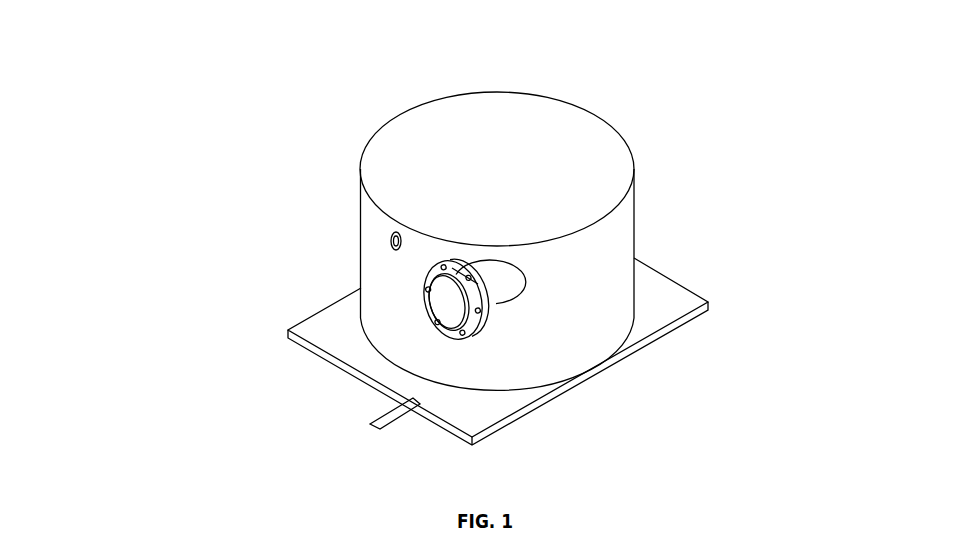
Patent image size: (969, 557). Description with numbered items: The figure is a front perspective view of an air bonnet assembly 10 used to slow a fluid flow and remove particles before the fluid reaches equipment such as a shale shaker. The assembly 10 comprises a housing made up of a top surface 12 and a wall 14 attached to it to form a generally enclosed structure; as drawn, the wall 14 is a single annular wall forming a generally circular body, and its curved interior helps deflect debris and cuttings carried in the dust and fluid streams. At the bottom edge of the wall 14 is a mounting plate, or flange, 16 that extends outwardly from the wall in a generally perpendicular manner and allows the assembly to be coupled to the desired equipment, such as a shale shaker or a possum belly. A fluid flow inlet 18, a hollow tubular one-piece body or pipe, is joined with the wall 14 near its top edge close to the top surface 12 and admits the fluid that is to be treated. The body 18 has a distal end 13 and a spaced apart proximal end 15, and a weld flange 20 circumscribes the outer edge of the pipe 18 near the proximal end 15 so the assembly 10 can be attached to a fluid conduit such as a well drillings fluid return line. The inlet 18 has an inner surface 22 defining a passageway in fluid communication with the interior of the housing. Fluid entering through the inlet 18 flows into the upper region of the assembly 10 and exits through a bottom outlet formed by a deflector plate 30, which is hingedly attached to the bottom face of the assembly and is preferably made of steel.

The air bonnet assembly 10 is at (692, 89).
The top surface 12 is at (469, 150).
The distal end 13 is at (524, 279).
The wall 14 is at (376, 272).
The proximal end 15 is at (467, 328).
The mounting plate 16 is at (672, 291).
The fluid flow inlet 18 is at (508, 287).
The weld flange 20 is at (478, 323).
The inner surface 22 is at (450, 308).
The deflector plate 30 is at (375, 423).